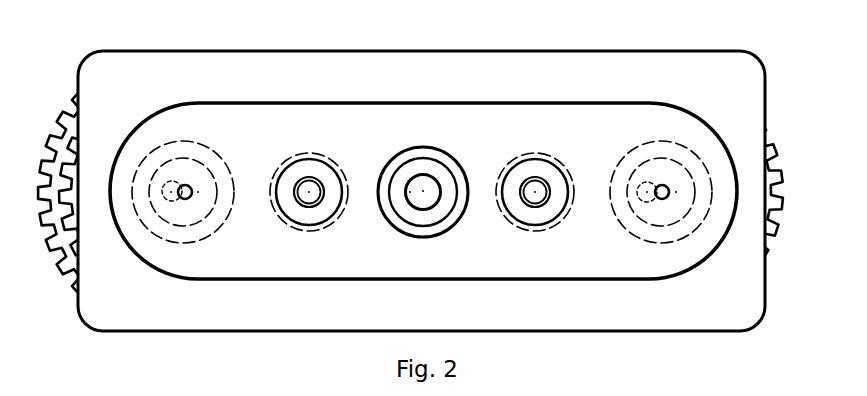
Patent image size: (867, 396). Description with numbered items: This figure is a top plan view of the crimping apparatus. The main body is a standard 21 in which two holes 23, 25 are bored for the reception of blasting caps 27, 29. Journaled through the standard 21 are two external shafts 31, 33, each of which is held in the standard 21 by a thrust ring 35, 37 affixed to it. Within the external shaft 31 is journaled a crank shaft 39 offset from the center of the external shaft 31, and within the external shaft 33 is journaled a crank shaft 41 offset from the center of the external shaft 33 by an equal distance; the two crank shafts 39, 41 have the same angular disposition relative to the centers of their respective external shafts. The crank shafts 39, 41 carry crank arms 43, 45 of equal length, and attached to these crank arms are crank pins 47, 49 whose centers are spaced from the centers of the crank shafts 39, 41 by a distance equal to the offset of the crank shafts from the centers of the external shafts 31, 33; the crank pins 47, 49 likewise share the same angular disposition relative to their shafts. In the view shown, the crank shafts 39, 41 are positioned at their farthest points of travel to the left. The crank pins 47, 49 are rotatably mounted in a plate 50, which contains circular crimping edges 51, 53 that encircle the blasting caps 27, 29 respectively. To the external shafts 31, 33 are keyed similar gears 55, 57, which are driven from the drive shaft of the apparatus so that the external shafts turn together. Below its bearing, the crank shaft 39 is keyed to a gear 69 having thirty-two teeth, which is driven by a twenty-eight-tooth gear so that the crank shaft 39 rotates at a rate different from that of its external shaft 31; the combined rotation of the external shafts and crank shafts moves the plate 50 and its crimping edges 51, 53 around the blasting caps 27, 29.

The standard 21 is at (368, 51).
The plate 50 is at (383, 103).
The hole 23 is at (298, 180).
The hole 25 is at (535, 178).
The blasting cap 27 is at (310, 179).
The blasting cap 29 is at (542, 187).
The external shaft 31 is at (167, 160).
The external shaft 33 is at (633, 167).
The thrust ring 35 is at (190, 140).
The thrust ring 37 is at (677, 140).
The crank shaft 39 is at (165, 197).
The crank shaft 41 is at (638, 197).
The crank arm 43 is at (173, 199).
The crank arm 45 is at (652, 200).
The crank pin 47 is at (186, 199).
The crank pin 49 is at (665, 199).
The circular crimping edge 51 is at (318, 223).
The circular crimping edge 53 is at (527, 223).
The gear 55 is at (70, 238).
The gear 57 is at (770, 242).
The gear 69 is at (52, 132).